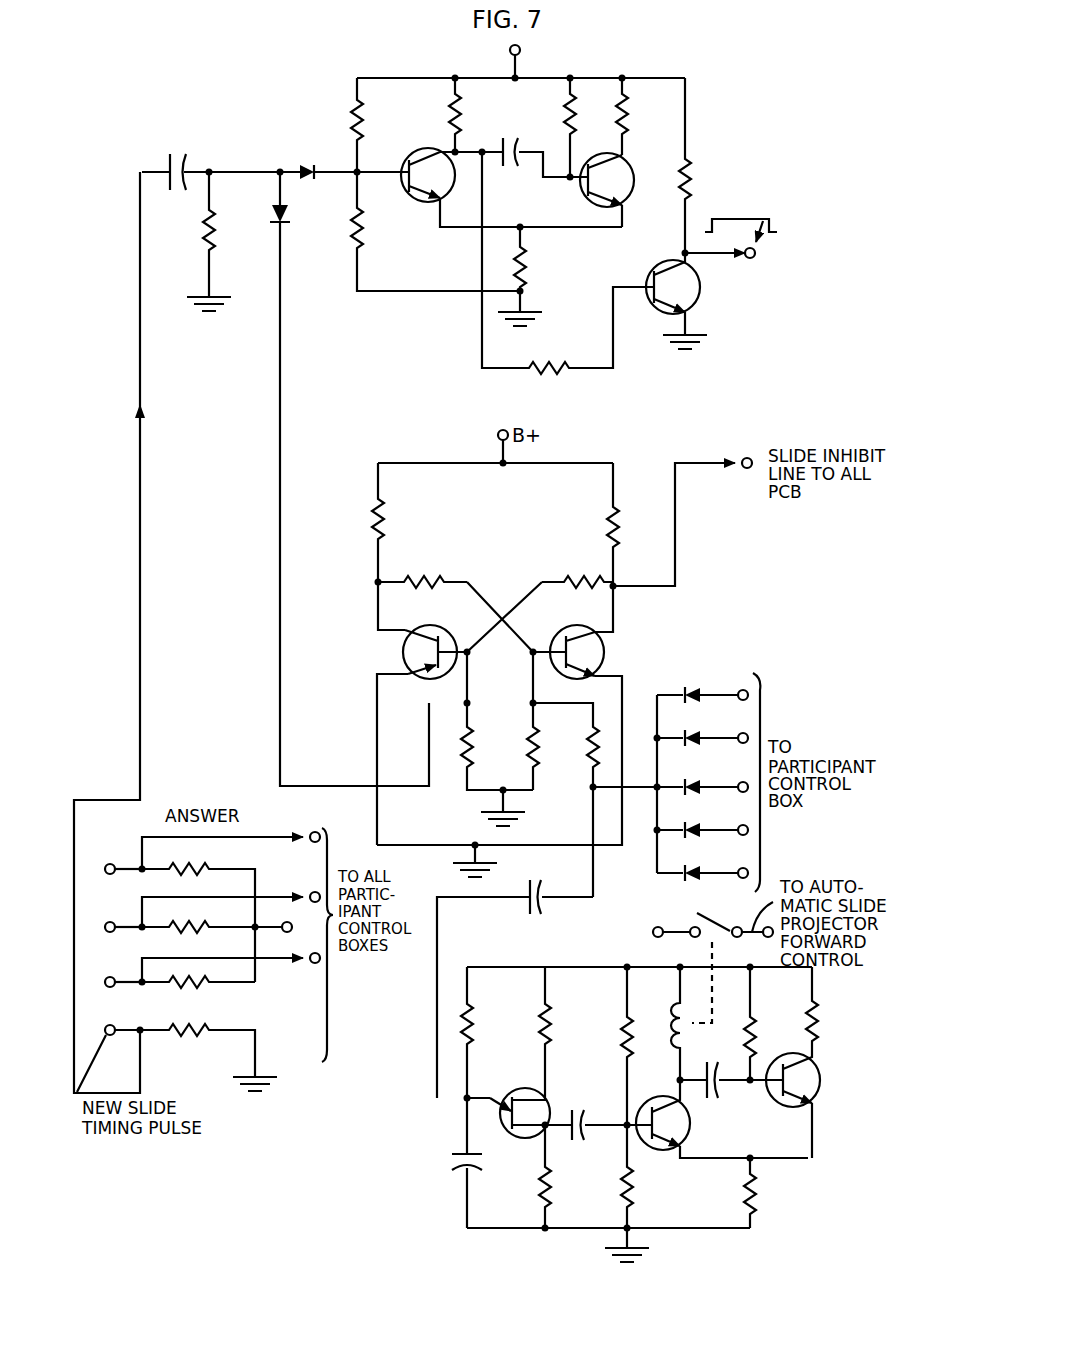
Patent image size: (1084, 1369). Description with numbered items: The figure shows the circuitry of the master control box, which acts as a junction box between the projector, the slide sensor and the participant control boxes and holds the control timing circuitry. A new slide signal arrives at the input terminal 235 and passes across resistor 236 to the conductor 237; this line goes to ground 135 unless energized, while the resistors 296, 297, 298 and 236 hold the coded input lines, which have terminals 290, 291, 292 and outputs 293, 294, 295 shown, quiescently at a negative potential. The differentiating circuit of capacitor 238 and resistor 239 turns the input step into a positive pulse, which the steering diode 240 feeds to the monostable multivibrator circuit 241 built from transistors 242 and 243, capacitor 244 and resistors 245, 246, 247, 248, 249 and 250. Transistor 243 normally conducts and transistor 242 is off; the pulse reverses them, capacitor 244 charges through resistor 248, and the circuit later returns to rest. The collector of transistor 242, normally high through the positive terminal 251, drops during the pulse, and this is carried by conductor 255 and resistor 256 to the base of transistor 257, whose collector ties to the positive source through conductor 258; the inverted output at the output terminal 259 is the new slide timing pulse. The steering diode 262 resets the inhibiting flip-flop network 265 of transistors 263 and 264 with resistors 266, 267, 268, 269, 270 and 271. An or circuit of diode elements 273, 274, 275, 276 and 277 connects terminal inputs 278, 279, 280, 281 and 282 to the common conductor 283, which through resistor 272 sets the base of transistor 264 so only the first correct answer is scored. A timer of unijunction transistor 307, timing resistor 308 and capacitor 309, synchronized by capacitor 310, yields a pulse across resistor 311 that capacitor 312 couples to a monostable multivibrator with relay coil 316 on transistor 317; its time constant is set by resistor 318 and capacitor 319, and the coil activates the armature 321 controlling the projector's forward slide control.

The ground 135 is at (220, 303).
The input terminal 235 is at (106, 1026).
The resistor 236 is at (190, 1038).
The conductor 237 is at (140, 735).
The capacitor 238 is at (170, 162).
The resistor 239 is at (197, 212).
The diode 240 is at (306, 164).
The multivibrator circuit 241 is at (512, 135).
The transistor 242 is at (420, 198).
The transistor 243 is at (620, 192).
The capacitor 244 is at (512, 170).
The resistor 245 is at (352, 118).
The resistor 246 is at (352, 232).
The resistor 247 is at (448, 118).
The resistor 248 is at (580, 132).
The resistor 249 is at (632, 132).
The resistor 250 is at (525, 254).
The positive terminal 251 is at (510, 50).
The conductor 255 is at (480, 325).
The resistor 256 is at (556, 375).
The transistor 257 is at (693, 288).
The conductor 258 is at (688, 133).
The output terminal 259 is at (740, 249).
The steering diode 262 is at (275, 220).
The transistor 263 is at (405, 658).
The transistor 264 is at (605, 653).
The inhibiting flip-flop network 265 is at (500, 604).
The resistor 266 is at (372, 518).
The resistor 267 is at (607, 520).
The resistor 268 is at (420, 580).
The resistor 269 is at (582, 580).
The resistor 270 is at (475, 748).
The resistor 271 is at (538, 748).
The resistor 272 is at (588, 740).
The diode element 273 is at (696, 687).
The diode element 274 is at (688, 733).
The diode element 275 is at (688, 781).
The diode element 276 is at (690, 824).
The diode element 277 is at (690, 867).
The terminal input 278 is at (744, 689).
The terminal input 279 is at (740, 733).
The terminal input 280 is at (740, 781).
The terminal input 281 is at (740, 824).
The terminal input 282 is at (740, 867).
The common conductor 283 is at (640, 790).
The input terminal 290 is at (106, 865).
The input terminal 291 is at (106, 922).
The input terminal 292 is at (106, 978).
The answer output terminal 293 is at (312, 832).
The answer output terminal 294 is at (310, 892).
The answer output terminal 295 is at (312, 965).
The resistor 296 is at (180, 866).
The resistor 297 is at (205, 925).
The resistor 298 is at (205, 980).
The unijunction transistor 307 is at (519, 1088).
The timing resistor 308 is at (471, 1016).
The capacitor 309 is at (455, 1156).
The capacitor 310 is at (541, 900).
The resistor 311 is at (552, 1168).
The capacitor 312 is at (573, 1105).
The relay coil 316 is at (627, 1012).
The transistor 317 is at (677, 1122).
The resistor 318 is at (757, 1012).
The capacitor 319 is at (713, 1070).
The armature 321 is at (757, 886).